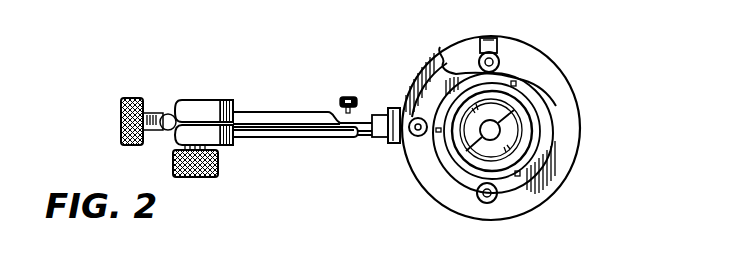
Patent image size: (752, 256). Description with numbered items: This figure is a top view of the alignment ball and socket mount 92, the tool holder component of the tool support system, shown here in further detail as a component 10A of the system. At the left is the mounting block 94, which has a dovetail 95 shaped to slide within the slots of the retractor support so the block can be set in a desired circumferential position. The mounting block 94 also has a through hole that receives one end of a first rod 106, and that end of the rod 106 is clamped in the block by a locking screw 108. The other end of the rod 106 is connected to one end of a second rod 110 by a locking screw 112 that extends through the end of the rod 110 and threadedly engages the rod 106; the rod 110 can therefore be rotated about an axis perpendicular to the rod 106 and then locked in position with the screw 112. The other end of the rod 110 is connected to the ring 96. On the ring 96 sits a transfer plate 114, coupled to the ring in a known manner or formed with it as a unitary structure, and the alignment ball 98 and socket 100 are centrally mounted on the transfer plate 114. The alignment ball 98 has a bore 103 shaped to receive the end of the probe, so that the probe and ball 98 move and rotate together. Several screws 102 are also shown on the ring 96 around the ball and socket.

The knurled adjusting knob 10A is at (133, 97).
The alignment ball and socket mount 92 is at (364, 183).
The mounting block 94 is at (198, 97).
The dovetail 95 is at (233, 99).
The ring 96 is at (548, 60).
The alignment ball 98 is at (455, 161).
The socket 100 is at (533, 108).
The screws 102 is at (432, 140).
The bore 103 is at (500, 131).
The first rod 106 is at (289, 137).
The locking screw 108 is at (206, 177).
The rod 110 is at (373, 111).
The locking screw 112 is at (346, 96).
The transfer plate 114 is at (446, 50).